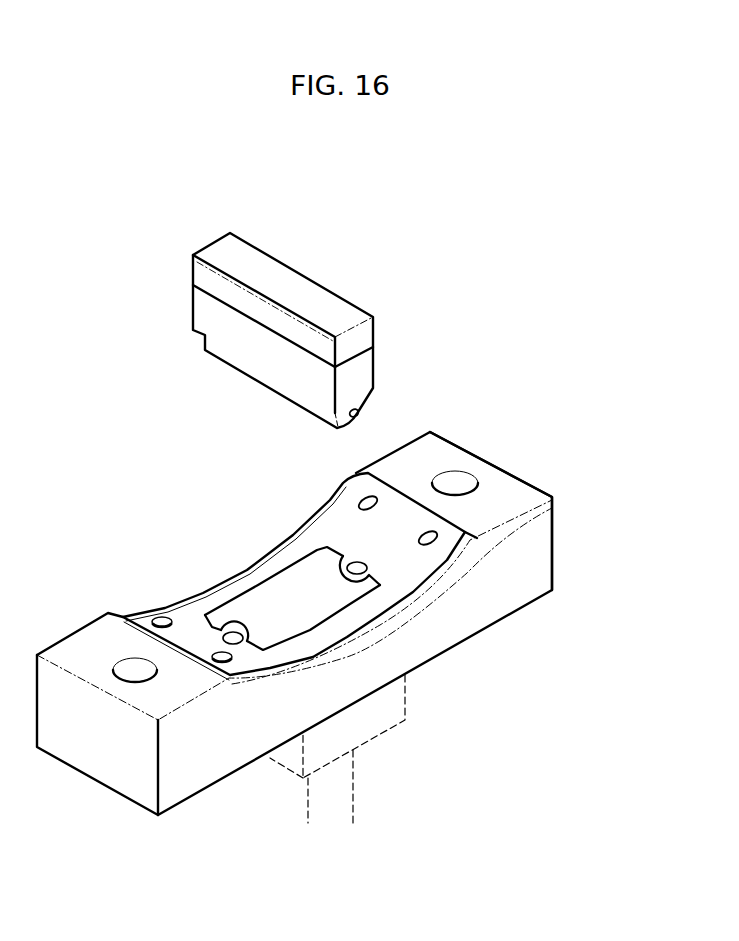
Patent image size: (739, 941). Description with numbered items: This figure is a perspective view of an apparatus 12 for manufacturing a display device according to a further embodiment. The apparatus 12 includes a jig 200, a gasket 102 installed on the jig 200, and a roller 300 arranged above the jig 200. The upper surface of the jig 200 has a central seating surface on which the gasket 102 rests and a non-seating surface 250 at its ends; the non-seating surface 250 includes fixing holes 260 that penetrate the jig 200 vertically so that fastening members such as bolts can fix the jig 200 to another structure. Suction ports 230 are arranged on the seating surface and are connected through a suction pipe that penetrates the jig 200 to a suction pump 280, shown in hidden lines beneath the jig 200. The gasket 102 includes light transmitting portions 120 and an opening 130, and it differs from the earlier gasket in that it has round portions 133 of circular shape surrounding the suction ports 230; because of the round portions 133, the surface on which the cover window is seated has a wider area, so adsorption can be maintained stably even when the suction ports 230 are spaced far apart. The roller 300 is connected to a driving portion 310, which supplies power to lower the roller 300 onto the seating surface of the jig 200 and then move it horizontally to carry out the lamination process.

The apparatus for manufacturing a display device 12 is at (333, 190).
The gasket 102 is at (328, 535).
The light transmitting portions 120 is at (430, 542).
The opening 130 is at (294, 589).
The round portions 133 is at (345, 562).
The jig 200 is at (339, 613).
The suction ports 230 is at (353, 566).
The non-seating surface 250 is at (520, 490).
The fixing holes 260 is at (455, 477).
The suction pump 280 is at (400, 700).
The roller 300 is at (365, 370).
The driving portion 310 is at (365, 333).